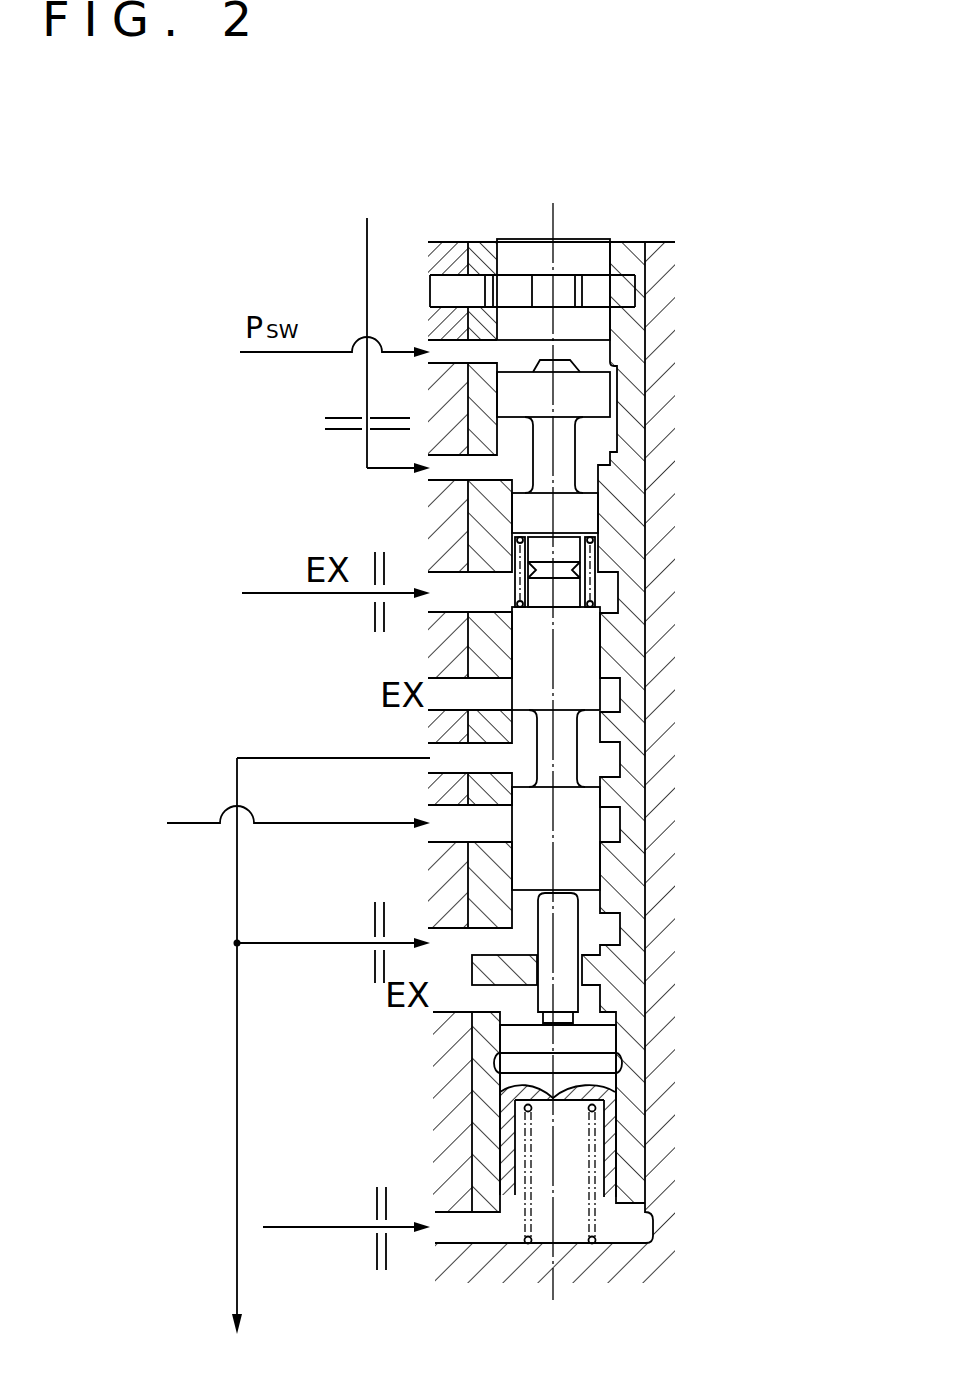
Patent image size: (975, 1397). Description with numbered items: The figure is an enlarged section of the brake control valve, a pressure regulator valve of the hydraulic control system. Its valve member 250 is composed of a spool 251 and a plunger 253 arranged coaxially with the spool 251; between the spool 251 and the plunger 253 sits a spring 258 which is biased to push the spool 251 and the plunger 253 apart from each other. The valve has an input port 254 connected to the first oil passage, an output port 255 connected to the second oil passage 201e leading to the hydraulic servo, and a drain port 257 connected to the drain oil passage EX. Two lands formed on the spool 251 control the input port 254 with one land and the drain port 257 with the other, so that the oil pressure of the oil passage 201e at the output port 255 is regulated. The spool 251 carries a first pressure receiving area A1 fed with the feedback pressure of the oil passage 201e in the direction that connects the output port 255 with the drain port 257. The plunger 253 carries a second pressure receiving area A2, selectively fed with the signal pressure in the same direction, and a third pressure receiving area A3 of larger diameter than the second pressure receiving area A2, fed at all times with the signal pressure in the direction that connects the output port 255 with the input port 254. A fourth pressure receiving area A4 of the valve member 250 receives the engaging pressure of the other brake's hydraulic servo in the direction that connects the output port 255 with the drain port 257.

The valve member 250 is at (588, 631).
The spool 251 is at (585, 826).
The plunger 253 is at (590, 470).
The input port 254 is at (434, 832).
The output port 255 is at (450, 746).
The drain port 257 is at (447, 672).
The spring 258 is at (605, 592).
The second oil passage 201e is at (237, 872).
The first pressure receiving area A1 is at (598, 898).
The second pressure receiving area A2 is at (600, 430).
The third pressure receiving area A3 is at (600, 368).
The fourth pressure receiving area A4 is at (572, 1110).